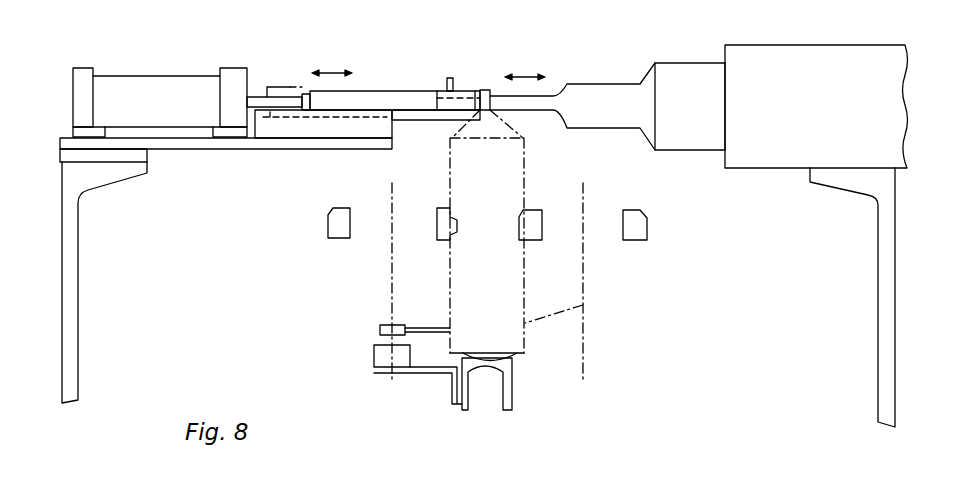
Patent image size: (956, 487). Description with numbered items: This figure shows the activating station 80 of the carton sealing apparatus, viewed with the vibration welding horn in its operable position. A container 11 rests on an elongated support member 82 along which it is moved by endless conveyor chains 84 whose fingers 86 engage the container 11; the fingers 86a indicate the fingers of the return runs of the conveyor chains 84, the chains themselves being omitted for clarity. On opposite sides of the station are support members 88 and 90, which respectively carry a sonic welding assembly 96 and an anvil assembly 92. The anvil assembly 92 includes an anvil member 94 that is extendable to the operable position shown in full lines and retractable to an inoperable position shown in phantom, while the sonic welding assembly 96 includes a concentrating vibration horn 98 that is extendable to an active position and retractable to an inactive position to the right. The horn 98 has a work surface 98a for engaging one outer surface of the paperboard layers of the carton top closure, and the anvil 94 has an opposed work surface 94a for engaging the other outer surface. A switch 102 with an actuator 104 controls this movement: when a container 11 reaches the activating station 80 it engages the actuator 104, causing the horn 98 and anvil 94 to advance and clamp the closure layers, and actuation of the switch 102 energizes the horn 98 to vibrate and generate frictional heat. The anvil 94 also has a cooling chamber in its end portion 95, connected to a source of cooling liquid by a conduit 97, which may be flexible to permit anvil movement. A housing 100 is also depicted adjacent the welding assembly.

The container 11 is at (581, 303).
The activating station 80 is at (526, 53).
The elongated support member 82 is at (510, 397).
The endless conveyor chains 84 is at (350, 232).
The fingers 86 is at (455, 237).
The fingers of return runs 86a is at (330, 227).
The support member 88 is at (885, 243).
The support member 90 is at (73, 342).
The anvil assembly 92 is at (155, 85).
The anvil member 94 is at (288, 82).
The work surface of anvil 94a is at (487, 112).
The end portion 95 is at (477, 90).
The sonic welding assembly 96 is at (687, 63).
The conduit 97 is at (448, 82).
The concentrating vibration horn 98 is at (543, 112).
The work surface of horn 98a is at (487, 92).
The housing 100 is at (843, 65).
The switch 102 is at (374, 357).
The actuator 104 is at (380, 330).